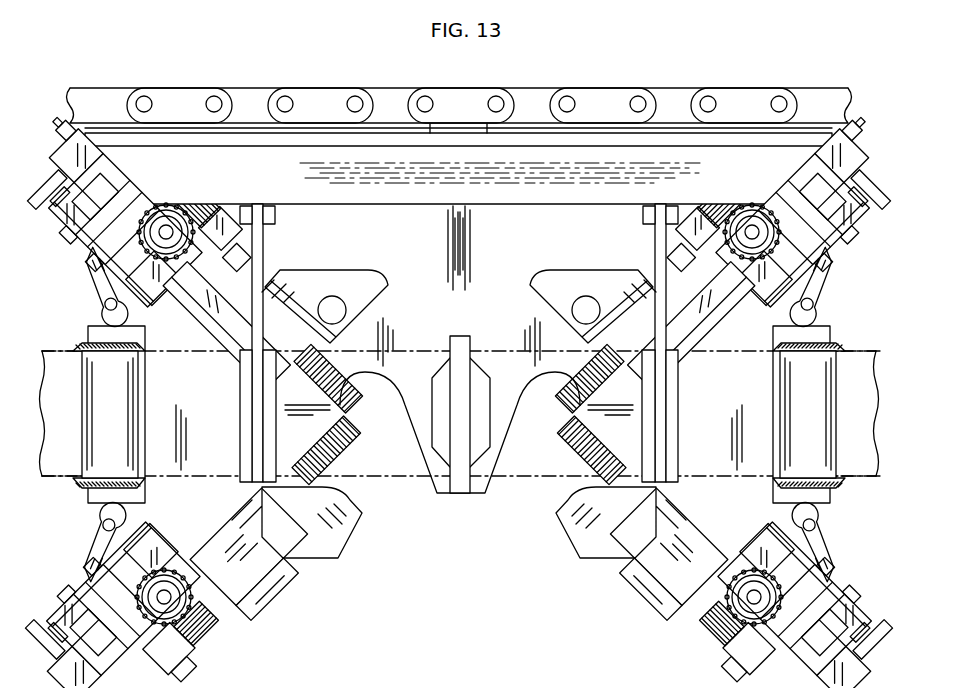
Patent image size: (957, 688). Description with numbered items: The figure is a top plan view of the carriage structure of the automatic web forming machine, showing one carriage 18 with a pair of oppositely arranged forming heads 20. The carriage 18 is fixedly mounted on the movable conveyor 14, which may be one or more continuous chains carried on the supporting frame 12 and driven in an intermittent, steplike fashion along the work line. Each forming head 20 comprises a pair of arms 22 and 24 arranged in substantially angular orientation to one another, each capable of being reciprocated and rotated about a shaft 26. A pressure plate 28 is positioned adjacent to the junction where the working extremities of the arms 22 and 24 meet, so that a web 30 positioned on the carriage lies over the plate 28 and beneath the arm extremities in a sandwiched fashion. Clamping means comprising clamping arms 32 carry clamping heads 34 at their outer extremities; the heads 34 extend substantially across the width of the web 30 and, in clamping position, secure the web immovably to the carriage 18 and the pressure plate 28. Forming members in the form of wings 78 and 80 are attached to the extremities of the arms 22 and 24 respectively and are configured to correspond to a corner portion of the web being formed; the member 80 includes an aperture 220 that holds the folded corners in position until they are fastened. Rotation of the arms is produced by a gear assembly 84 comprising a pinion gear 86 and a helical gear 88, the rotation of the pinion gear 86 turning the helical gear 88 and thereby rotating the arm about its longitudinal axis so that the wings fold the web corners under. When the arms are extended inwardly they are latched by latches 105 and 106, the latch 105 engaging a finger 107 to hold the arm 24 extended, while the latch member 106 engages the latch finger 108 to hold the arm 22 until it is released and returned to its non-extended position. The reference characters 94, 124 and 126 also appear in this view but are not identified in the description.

The supporting frame 12 is at (515, 201).
The movable conveyor 14 is at (590, 101).
The carriage 18 is at (438, 544).
The forming head 20 is at (276, 580).
The arm 22 is at (206, 522).
The arm 24 is at (182, 296).
The shaft 26 is at (54, 172).
The pressure plate 28 is at (348, 398).
The web 30 is at (395, 352).
The clamping arm 32 is at (264, 234).
The clamping head 34 is at (240, 422).
The forming member 78 is at (358, 525).
The forming member 80 is at (348, 272).
The gear assembly 84 is at (166, 201).
The pinion gear 86 is at (184, 246).
The helical gear 88 is at (200, 205).
The pivot pin 94 is at (164, 232).
The latch 105 is at (82, 265).
The latch member 106 is at (92, 522).
The finger 107 is at (58, 216).
The latch finger 108 is at (88, 590).
The left roller 124 is at (133, 385).
The right roller 126 is at (822, 386).
The aperture 220 is at (322, 300).